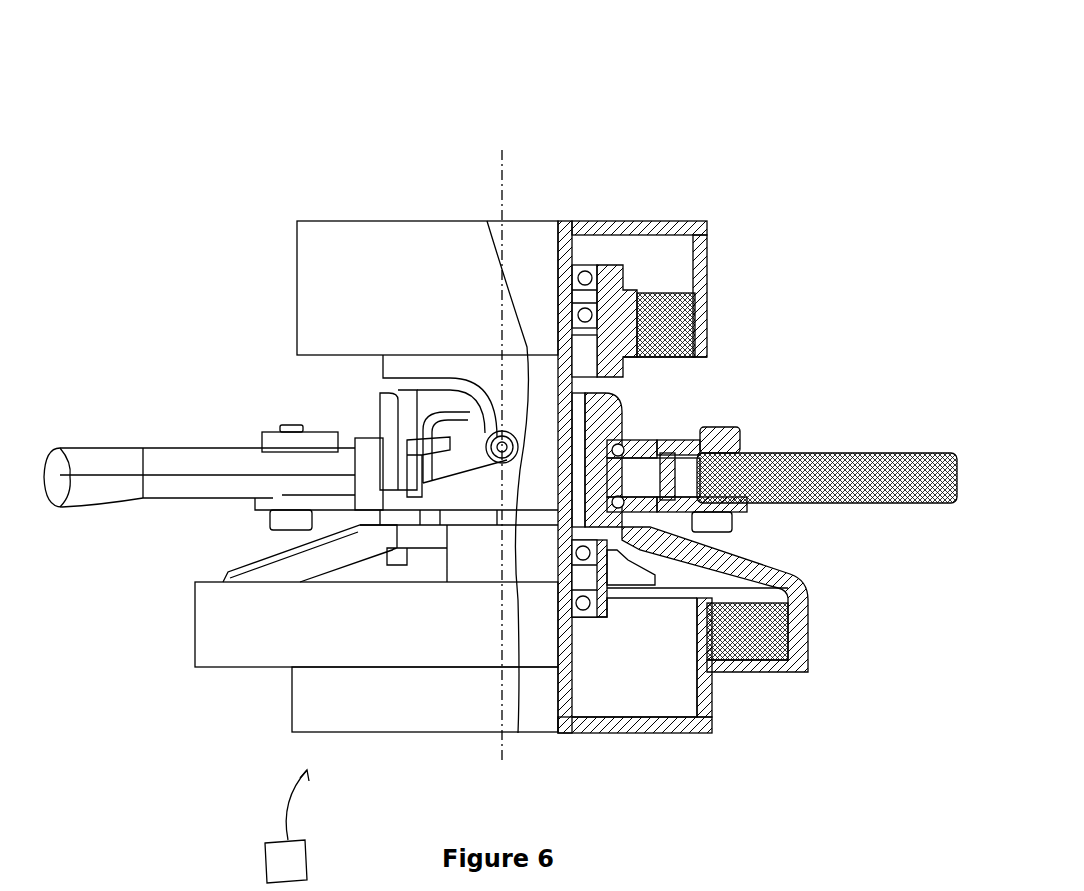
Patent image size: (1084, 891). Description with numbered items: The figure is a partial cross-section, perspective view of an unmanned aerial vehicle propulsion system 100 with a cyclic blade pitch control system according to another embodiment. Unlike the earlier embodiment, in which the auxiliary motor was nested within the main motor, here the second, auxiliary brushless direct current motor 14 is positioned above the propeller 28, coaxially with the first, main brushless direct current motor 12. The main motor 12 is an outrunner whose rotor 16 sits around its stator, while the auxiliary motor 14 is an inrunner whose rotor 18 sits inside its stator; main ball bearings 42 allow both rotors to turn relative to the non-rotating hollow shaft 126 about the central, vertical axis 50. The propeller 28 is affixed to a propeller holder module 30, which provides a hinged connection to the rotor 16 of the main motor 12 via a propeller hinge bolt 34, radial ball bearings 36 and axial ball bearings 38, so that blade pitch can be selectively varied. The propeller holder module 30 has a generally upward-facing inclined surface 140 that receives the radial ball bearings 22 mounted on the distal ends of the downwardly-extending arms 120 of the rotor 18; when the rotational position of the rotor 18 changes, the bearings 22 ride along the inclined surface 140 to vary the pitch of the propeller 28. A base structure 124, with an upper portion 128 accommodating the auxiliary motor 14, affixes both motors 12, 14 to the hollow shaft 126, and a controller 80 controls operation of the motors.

The unmanned aerial vehicle propulsion system 100 is at (390, 120).
The second, auxiliary brushless direct current motor 14 is at (713, 262).
The base structure 124 is at (705, 727).
The main ball bearings 42 is at (596, 263).
The upper portion 128 is at (638, 292).
The rotor 18 is at (707, 253).
The axial ball bearings 38 is at (637, 433).
The radial ball bearings 36 is at (660, 445).
The propeller hinge bolt 34 is at (718, 428).
The propeller 28 is at (180, 465).
The first, main brushless direct current motor 12 is at (790, 585).
The rotor 16 is at (808, 612).
The hollow shaft 126 is at (533, 240).
The central, vertical axis 50 is at (503, 212).
The downwardly-extending arms 120 is at (495, 400).
The radial ball bearings 22 is at (425, 425).
The inclined surface 140 is at (410, 442).
The propeller holder module 30 is at (368, 452).
The controller 80 is at (307, 862).